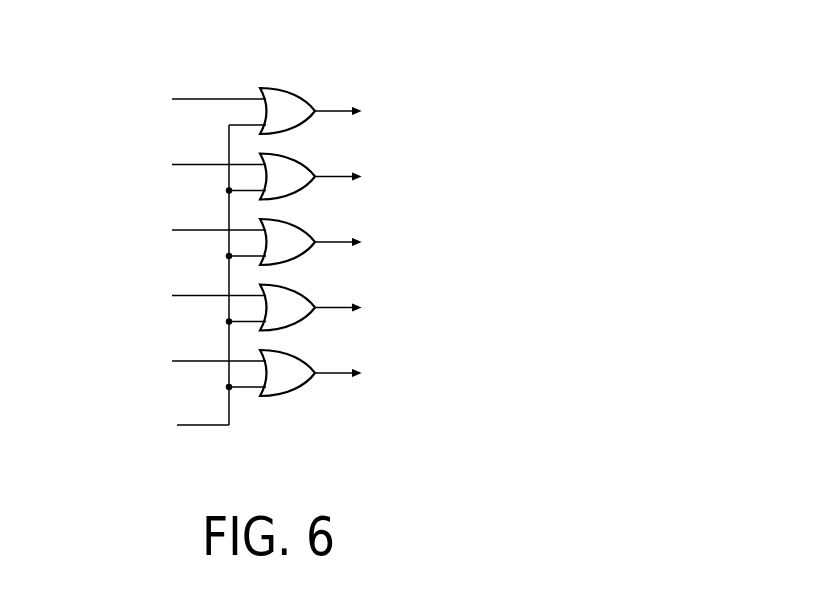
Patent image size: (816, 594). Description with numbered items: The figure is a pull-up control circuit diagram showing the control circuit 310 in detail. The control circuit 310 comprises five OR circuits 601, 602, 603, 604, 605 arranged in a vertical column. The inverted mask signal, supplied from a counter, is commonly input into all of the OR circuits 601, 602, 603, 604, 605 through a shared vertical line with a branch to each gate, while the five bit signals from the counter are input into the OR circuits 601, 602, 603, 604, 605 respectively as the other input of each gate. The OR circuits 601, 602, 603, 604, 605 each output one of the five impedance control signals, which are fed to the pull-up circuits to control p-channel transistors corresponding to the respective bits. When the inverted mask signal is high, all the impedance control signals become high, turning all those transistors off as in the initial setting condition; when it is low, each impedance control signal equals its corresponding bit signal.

The control circuit 310 is at (437, 37).
The OR circuit 601 is at (307, 94).
The OR circuit 602 is at (307, 160).
The OR circuit 603 is at (307, 225).
The OR circuit 604 is at (307, 290).
The OR circuit 605 is at (307, 356).